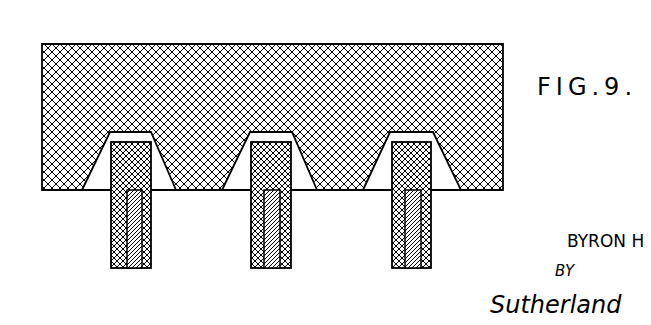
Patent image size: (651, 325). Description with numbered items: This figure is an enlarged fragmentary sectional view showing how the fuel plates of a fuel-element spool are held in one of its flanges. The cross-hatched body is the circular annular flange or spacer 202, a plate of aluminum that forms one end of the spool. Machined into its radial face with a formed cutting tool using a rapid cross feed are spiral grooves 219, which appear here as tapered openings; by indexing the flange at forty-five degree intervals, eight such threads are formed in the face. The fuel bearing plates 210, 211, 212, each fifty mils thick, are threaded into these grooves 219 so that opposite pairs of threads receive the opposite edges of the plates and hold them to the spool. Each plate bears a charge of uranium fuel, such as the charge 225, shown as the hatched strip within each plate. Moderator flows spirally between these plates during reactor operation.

The annular flange or spacer 202 is at (332, 44).
The spiral groove 219 is at (86, 181).
The fuel bearing plate 210 is at (151, 232).
The fuel bearing plate 211 is at (291, 235).
The fuel bearing plate 212 is at (431, 233).
The charge of U-235 225 is at (135, 270).